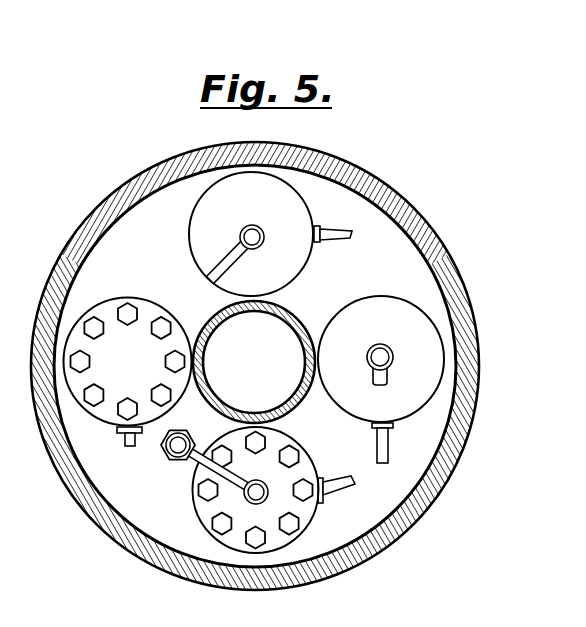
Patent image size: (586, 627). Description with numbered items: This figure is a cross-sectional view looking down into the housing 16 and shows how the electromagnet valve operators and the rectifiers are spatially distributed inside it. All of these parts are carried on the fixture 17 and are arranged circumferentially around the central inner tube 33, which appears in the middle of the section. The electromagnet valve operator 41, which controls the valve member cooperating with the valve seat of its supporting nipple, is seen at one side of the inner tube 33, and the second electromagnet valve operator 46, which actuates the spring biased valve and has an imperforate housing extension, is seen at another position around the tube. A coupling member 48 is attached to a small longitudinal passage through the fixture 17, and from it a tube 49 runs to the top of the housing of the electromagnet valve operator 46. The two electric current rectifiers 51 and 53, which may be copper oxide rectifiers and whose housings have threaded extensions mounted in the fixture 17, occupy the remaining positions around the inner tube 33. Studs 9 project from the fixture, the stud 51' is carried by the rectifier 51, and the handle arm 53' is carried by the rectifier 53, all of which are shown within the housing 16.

The stud pin 9 is at (338, 231).
The housing 16 is at (468, 315).
The fixture 17 is at (413, 448).
The inner tube 33 is at (268, 306).
The electromagnet valve operator 41 is at (143, 373).
The electromagnet valve operator 46 is at (278, 540).
The coupling member 48 is at (165, 451).
The tube 49 is at (207, 470).
The electric current rectifier 51 is at (418, 359).
The stud on cover 51' is at (274, 403).
The electric current rectifier 53 is at (275, 234).
The handle arm 53' is at (264, 371).